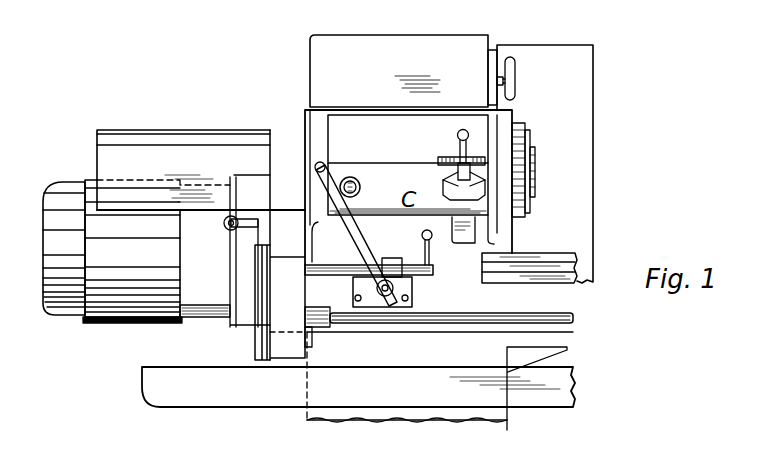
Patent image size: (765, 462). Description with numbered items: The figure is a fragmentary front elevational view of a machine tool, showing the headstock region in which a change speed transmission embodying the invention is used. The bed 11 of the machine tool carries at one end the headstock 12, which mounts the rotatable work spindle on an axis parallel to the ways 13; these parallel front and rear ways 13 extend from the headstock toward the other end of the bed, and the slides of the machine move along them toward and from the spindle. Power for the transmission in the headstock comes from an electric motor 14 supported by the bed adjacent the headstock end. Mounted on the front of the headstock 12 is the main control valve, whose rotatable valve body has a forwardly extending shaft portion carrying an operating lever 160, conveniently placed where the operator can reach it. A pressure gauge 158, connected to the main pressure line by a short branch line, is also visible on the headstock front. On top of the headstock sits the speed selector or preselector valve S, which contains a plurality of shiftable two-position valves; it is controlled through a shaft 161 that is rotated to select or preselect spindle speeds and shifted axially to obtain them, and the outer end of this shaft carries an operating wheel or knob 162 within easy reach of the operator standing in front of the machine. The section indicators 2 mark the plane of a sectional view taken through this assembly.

The section line 2- 2 is at (28, 52).
The speed selector or preselector valve S is at (412, 44).
The bed 11 is at (565, 347).
The headstock 12 is at (411, 129).
The ways 13 is at (544, 262).
The electric motor 14 is at (146, 256).
The pressure gauge 158 is at (369, 180).
The operating lever 160 is at (456, 142).
The shaft 161 is at (503, 58).
The operating wheel or knob 162 is at (516, 78).